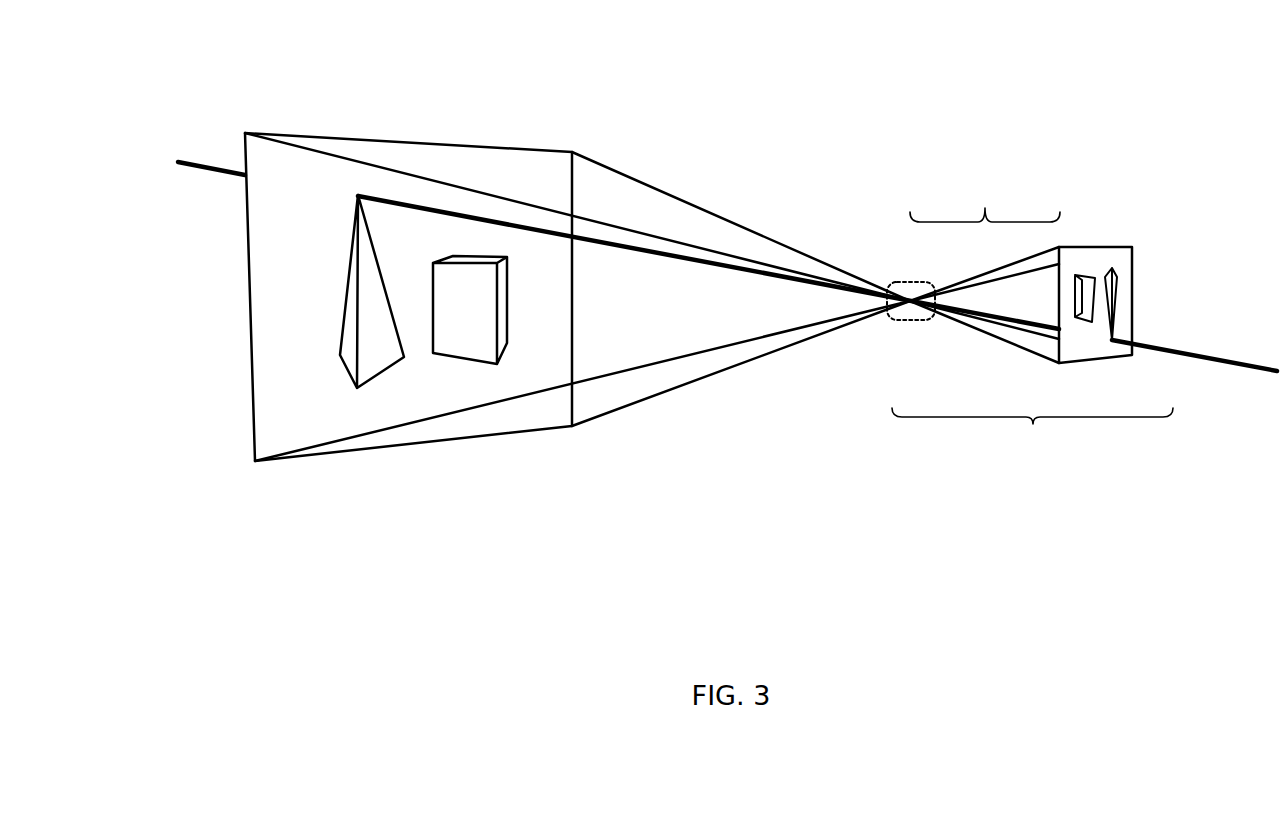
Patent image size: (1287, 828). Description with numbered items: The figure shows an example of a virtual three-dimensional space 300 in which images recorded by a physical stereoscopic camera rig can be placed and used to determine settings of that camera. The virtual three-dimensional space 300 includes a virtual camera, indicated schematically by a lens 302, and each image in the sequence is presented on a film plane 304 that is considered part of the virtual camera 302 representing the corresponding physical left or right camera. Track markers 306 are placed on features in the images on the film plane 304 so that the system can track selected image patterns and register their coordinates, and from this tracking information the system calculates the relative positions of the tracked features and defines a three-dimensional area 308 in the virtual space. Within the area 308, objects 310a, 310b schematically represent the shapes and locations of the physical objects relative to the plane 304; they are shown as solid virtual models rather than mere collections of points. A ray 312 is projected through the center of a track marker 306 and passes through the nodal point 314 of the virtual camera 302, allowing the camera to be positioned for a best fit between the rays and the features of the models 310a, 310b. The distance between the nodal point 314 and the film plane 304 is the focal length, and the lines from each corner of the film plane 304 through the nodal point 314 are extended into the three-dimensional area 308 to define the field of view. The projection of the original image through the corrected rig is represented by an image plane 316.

The virtual three-dimensional space 300 is at (855, 97).
The lens 302 is at (919, 282).
The film plane 304 is at (1131, 247).
The track markers 306 is at (1117, 361).
The 3D area 308 is at (632, 153).
The object 310a is at (340, 356).
The object 310b is at (467, 362).
The ray 312 is at (189, 160).
The nodal point 314 is at (910, 316).
The image plane 316 is at (396, 141).